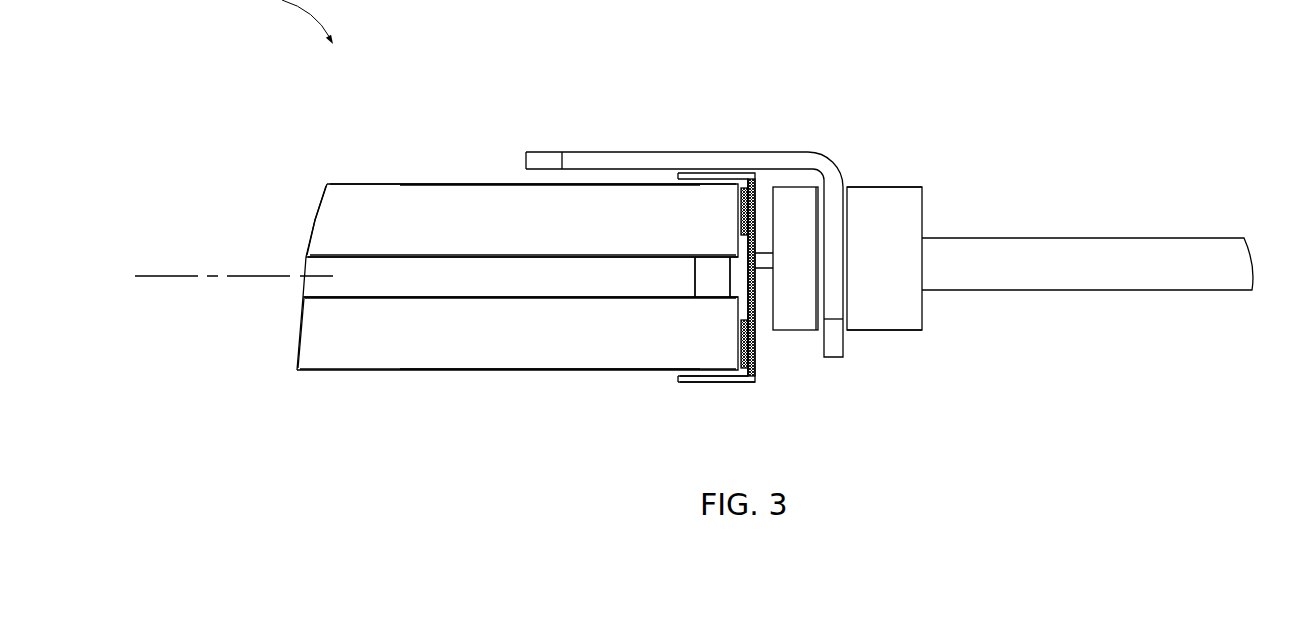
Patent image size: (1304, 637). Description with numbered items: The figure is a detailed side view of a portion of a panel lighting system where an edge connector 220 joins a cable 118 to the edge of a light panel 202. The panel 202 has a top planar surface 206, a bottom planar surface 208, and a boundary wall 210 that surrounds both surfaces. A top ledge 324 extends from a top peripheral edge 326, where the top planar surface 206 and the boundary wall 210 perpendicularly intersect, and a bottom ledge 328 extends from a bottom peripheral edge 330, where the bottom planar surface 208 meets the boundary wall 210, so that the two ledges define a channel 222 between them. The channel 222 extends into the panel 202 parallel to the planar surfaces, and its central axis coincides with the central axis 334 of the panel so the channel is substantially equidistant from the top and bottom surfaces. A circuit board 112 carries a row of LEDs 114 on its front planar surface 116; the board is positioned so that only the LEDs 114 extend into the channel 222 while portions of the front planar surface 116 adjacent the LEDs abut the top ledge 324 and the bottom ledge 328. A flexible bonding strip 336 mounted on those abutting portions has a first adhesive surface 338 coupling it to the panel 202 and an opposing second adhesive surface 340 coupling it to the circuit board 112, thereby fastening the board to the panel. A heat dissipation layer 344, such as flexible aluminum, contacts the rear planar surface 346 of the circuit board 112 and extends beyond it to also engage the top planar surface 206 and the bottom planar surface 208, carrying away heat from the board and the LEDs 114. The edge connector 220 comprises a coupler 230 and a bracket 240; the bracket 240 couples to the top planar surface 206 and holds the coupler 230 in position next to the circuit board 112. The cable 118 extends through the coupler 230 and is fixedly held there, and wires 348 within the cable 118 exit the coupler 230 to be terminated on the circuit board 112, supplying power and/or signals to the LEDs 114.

The circuit board 112 is at (748, 188).
The LEDs 114 is at (716, 252).
The front planar surface 116 is at (745, 245).
The cable 118 is at (1022, 285).
The panel 202 is at (403, 416).
The top planar surface 206 is at (363, 182).
The bottom planar surface 208 is at (353, 373).
The boundary wall 210 is at (176, 192).
The edge connector 220 is at (885, 128).
The channel 222 is at (332, 277).
The coupler 230 is at (925, 184).
The bracket 240 is at (738, 151).
The top ledge 324 is at (343, 225).
The top peripheral edge 326 is at (415, 188).
The bottom ledge 328 is at (345, 338).
The bottom peripheral edge 330 is at (417, 370).
The central axis 334 is at (170, 273).
The bonding strip 336 is at (740, 373).
The first adhesive surface 338 is at (743, 348).
The second adhesive surface 340 is at (753, 345).
The heat dissipation layer 344 is at (697, 170).
The rear planar surface 346 is at (760, 325).
The wires 348 is at (795, 274).